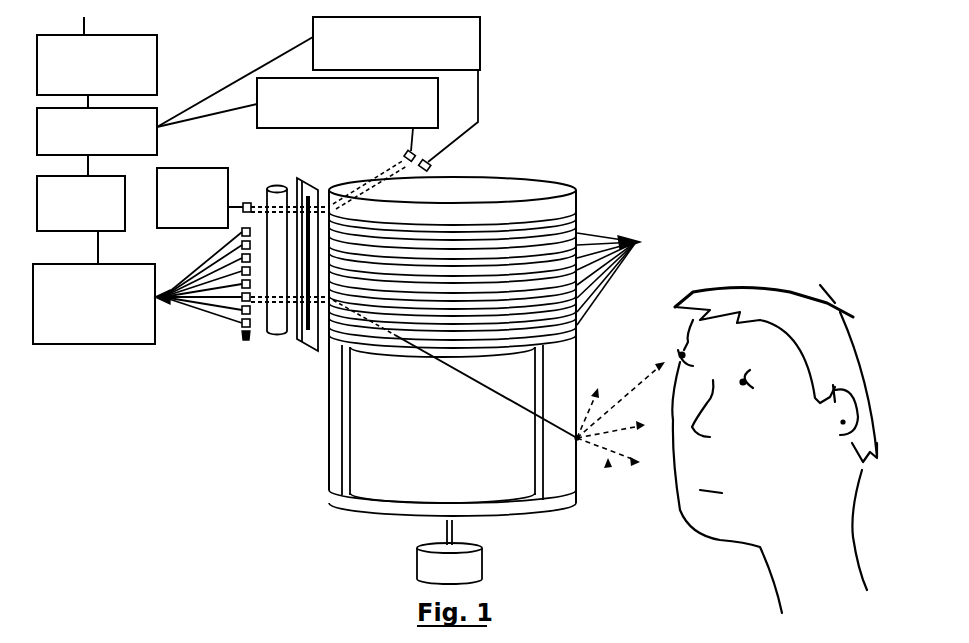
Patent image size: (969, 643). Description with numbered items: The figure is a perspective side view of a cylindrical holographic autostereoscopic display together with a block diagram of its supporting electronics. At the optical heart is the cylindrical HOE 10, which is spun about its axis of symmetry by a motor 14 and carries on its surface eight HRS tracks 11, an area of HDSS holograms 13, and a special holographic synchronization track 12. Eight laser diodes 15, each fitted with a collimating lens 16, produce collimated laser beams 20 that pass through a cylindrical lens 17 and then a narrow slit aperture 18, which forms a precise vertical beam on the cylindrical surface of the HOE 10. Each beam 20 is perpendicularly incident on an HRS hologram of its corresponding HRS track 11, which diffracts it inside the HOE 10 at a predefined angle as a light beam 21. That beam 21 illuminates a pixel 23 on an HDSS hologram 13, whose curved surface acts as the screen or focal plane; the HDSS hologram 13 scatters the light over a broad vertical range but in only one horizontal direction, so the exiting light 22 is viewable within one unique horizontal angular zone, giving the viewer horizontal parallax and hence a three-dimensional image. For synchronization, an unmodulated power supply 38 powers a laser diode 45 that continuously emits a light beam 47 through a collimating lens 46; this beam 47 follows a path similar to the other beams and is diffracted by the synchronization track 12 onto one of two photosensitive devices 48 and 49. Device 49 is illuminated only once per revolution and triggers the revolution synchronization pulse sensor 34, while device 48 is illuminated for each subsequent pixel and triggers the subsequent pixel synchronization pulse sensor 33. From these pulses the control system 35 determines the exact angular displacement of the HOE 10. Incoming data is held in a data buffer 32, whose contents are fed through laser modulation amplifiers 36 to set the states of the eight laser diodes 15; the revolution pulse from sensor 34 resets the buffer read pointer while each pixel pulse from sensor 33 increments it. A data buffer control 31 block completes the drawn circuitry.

The cylindrical HOE 10 is at (574, 186).
The HRS track 11 is at (622, 278).
The holographic synchronization track 12 is at (578, 212).
The HDSS hologram 13 is at (377, 508).
The motor 14 is at (482, 566).
The laser diode 15 is at (245, 334).
The collimating lens 16 is at (247, 342).
The cylindrical lens 17 is at (268, 334).
The narrow slit aperture 18 is at (298, 340).
The collimated laser beam 20 is at (257, 302).
The light beam 21 is at (407, 348).
The exiting light 22 is at (608, 466).
The pixel 23 is at (577, 440).
The data buffer control 31 is at (157, 45).
The data buffer 32 is at (157, 118).
The subsequent pixel synchronization pulse sensor 33 is at (438, 114).
The revolution synchronization pulse sensor 34 is at (480, 52).
The control system 35 is at (88, 231).
The laser modulation amplifiers 36 is at (97, 344).
The synchronization laser diode power supply 38 is at (178, 228).
The laser diode 45 is at (246, 202).
The collimating lens 46 is at (255, 204).
The light beam 47 is at (262, 199).
The photosensitive device 48 is at (402, 155).
The photosensitive device 49 is at (431, 167).